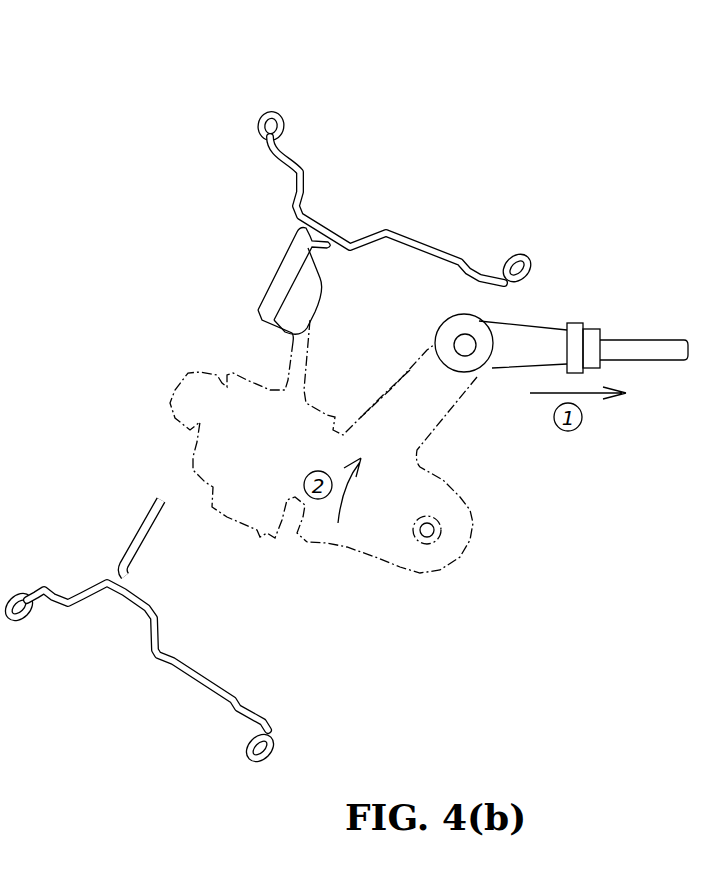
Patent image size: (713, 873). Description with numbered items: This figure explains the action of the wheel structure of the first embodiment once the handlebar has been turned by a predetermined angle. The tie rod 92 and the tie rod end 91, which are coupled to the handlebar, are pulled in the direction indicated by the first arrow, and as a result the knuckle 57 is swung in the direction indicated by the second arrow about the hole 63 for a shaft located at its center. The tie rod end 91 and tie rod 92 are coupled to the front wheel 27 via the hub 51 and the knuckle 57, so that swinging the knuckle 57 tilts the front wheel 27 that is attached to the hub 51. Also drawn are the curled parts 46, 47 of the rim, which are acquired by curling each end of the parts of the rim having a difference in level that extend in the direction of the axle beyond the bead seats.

The front wheel 27 is at (277, 272).
The curled part 46 is at (268, 110).
The curled part 47 is at (518, 252).
The hub 51 is at (322, 280).
The knuckle 57 is at (473, 523).
The hole for a shaft 63 is at (428, 540).
The tie rod end 91 is at (499, 372).
The tie rod 92 is at (636, 335).